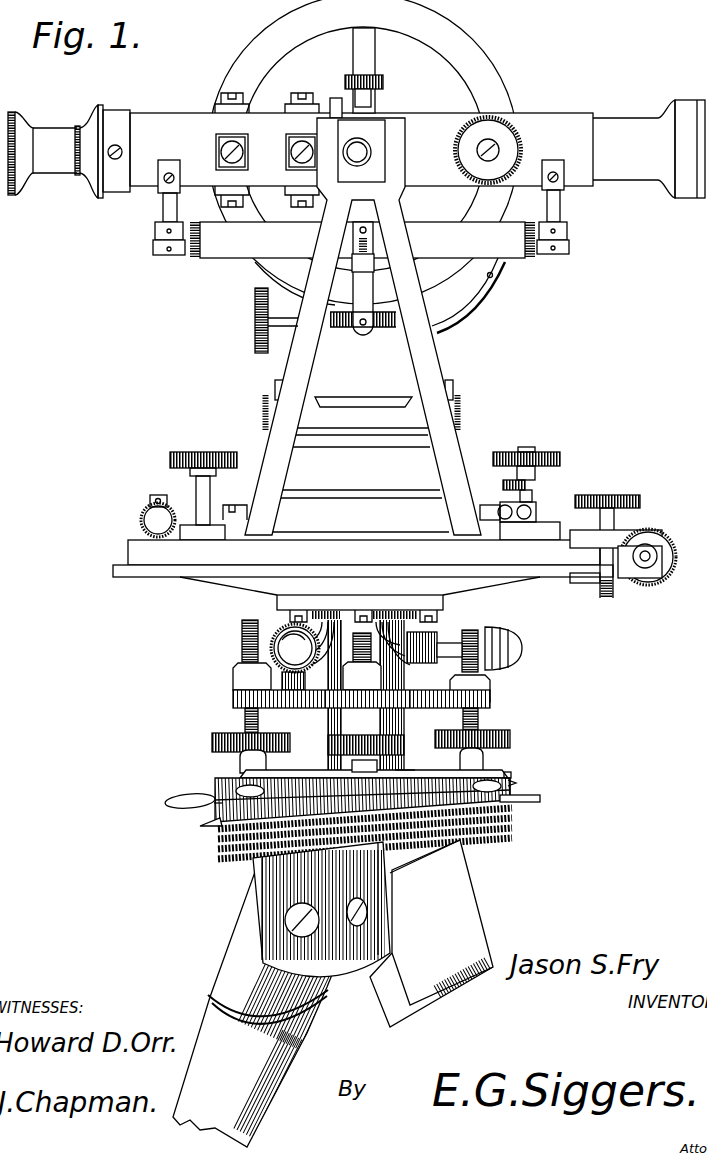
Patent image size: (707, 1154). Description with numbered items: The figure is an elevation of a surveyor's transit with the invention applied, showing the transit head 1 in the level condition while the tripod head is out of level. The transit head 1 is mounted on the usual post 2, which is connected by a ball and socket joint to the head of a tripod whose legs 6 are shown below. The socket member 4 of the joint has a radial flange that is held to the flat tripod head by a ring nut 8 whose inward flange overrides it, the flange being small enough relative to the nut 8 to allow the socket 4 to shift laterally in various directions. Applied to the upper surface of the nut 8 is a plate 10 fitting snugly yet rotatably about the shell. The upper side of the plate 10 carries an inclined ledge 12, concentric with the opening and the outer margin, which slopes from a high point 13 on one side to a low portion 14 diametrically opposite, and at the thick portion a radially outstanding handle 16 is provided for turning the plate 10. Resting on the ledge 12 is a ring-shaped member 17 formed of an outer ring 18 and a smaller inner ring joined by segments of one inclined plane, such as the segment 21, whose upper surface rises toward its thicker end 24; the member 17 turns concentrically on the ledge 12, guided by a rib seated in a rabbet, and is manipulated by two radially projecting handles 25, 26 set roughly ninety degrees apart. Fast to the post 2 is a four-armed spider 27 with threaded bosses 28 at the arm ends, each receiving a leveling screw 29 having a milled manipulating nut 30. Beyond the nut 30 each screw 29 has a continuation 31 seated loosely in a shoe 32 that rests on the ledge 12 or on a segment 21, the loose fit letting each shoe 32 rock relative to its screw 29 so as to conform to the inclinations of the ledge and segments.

The transit head 1 is at (363, 171).
The post 2 is at (400, 618).
The socket member 4 is at (404, 771).
The tripod legs 6 is at (383, 990).
The ring nut 8 is at (505, 818).
The plate 10 is at (540, 798).
The inclined ledge 12 is at (362, 802).
The high point 13 is at (207, 823).
The low portion 14 is at (509, 790).
The handle 16 is at (182, 812).
The ring-shaped member 17 is at (509, 777).
The outer ring 18 is at (514, 783).
The inclined plane segment 21 is at (240, 763).
The thicker end of segment 24 is at (283, 773).
The handle 25 is at (228, 787).
The handle 26 is at (507, 841).
The spider 27 is at (233, 698).
The boss 28 is at (235, 680).
The leveling screw 29 is at (243, 640).
The manipulating nut 30 is at (287, 738).
The continuation 31 is at (240, 747).
The shoe 32 is at (238, 757).